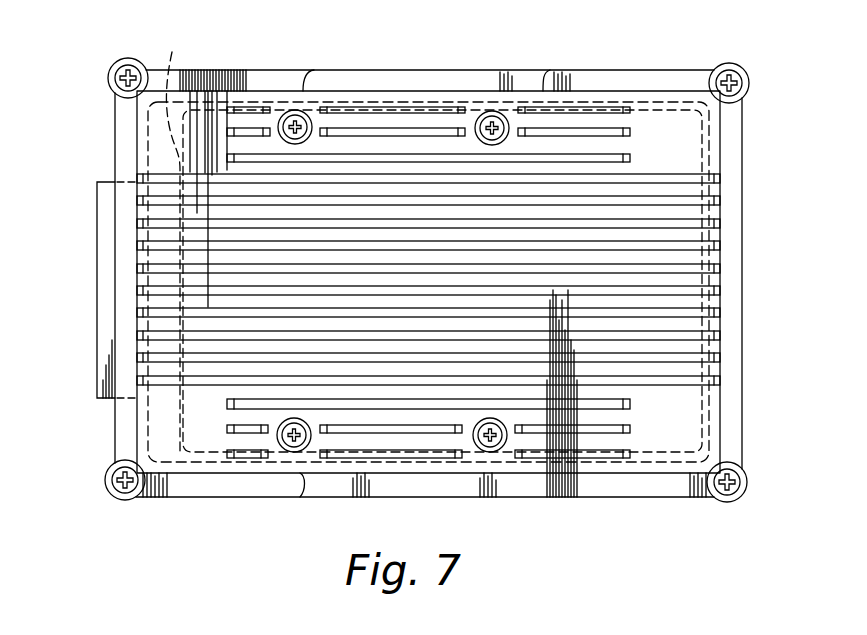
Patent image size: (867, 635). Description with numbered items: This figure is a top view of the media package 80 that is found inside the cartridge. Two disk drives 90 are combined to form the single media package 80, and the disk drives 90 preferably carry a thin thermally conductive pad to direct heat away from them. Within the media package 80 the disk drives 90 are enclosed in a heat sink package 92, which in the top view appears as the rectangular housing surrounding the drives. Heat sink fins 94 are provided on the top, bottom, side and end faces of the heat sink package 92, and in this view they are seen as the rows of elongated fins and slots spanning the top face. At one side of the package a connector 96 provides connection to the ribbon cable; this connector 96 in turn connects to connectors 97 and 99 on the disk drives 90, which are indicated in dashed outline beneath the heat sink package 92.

The media package 80 is at (687, 60).
The disk drive 90 is at (713, 392).
The heat sink package 92 is at (729, 131).
The heat sink fins 94 is at (590, 128).
The connector 96 is at (97, 203).
The connector 97 is at (183, 240).
The connector 99 is at (173, 252).